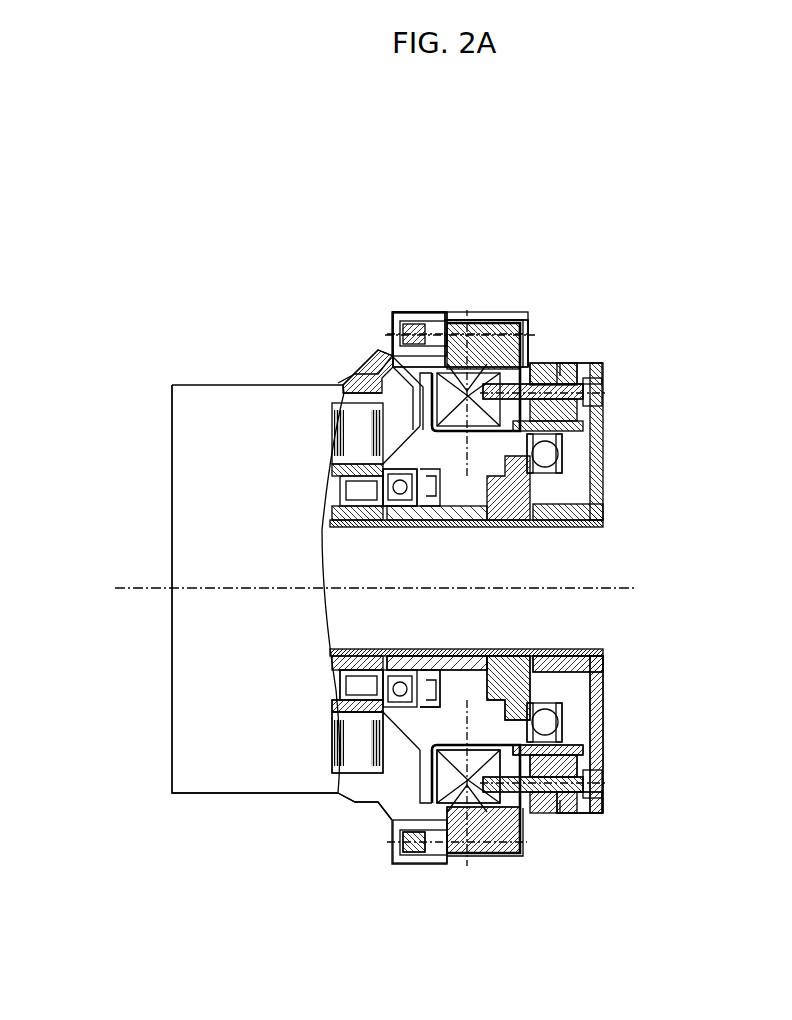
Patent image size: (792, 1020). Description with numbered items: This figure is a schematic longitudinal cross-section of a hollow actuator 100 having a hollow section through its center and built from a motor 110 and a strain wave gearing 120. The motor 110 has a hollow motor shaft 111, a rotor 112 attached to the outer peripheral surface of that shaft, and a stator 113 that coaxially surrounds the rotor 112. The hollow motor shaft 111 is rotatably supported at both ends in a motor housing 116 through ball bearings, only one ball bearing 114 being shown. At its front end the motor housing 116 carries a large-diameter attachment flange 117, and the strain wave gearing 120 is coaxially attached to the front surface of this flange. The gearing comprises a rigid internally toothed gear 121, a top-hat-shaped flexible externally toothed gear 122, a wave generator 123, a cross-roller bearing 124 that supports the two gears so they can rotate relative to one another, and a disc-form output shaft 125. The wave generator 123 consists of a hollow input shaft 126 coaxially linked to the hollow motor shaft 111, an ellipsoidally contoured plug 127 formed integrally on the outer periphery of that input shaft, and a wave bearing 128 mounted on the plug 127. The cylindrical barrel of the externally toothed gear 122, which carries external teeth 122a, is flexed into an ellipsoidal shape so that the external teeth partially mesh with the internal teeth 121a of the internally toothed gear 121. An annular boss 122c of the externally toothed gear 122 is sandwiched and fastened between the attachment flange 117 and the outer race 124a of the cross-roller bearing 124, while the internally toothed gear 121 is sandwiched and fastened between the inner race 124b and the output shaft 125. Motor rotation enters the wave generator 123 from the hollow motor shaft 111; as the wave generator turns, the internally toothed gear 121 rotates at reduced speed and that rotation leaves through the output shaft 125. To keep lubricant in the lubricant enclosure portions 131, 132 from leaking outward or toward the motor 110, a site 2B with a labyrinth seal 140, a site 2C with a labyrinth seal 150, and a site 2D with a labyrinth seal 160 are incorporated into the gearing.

The actuator 100 is at (362, 268).
The site of lubricant sealing structure provided with labyrinth seal 160 2D is at (534, 318).
The attachment flange 117 is at (378, 360).
The site of lubricant sealing structure provided with labyrinth seal 150 2C is at (348, 375).
The lubricant enclosure portion 131 is at (448, 450).
The lubricant enclosure portion 132 is at (485, 415).
The labyrinth seal 160 is at (530, 360).
The site of lubricant sealing structure provided with labyrinth seal 140 2B is at (582, 455).
The labyrinth seal 140 is at (572, 488).
The labyrinth seal 150 is at (445, 505).
The wave bearing 128 is at (484, 658).
The ball bearing 114 is at (353, 650).
The inner race 124b is at (463, 712).
The plug 127 is at (503, 712).
The hollow input shaft 126 is at (548, 653).
The output shaft 125 is at (606, 686).
The wave generator 123 is at (587, 712).
The internal teeth 121a is at (590, 734).
The flexible externally toothed gear 122 is at (584, 738).
The rigid internally toothed gear 121 is at (574, 768).
The hollow motor shaft 111 is at (375, 682).
The rotor 112 is at (317, 705).
The stator 113 is at (317, 755).
The motor housing 116 is at (218, 797).
The motor 110 is at (305, 802).
The annular boss 122c is at (433, 812).
The cross-roller bearing 124 is at (481, 862).
The outer race 124a is at (503, 862).
The strain wave gearing 120 is at (540, 820).
The external teeth 122a is at (545, 800).